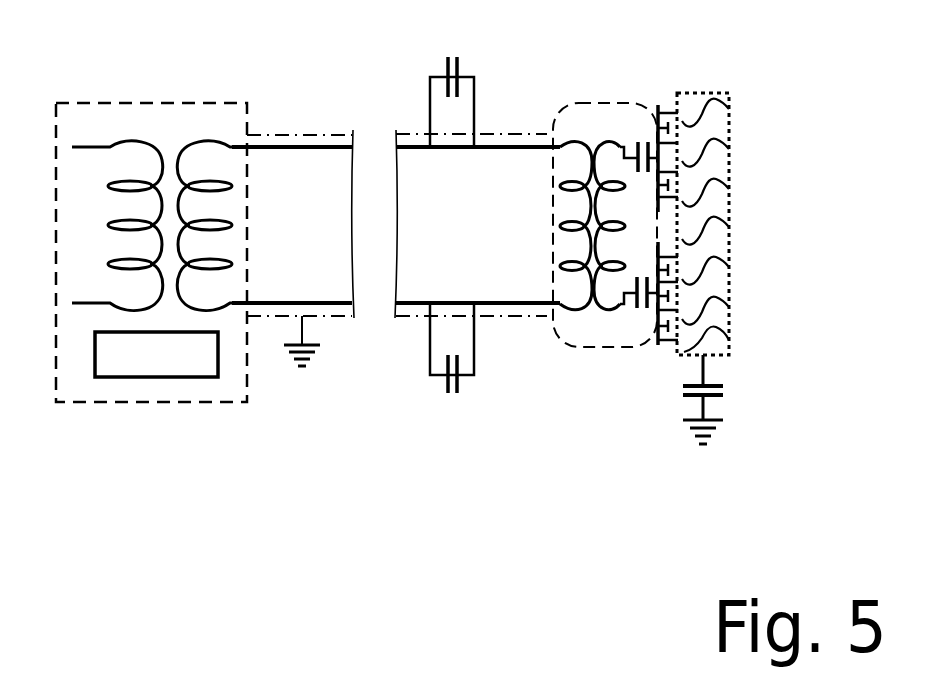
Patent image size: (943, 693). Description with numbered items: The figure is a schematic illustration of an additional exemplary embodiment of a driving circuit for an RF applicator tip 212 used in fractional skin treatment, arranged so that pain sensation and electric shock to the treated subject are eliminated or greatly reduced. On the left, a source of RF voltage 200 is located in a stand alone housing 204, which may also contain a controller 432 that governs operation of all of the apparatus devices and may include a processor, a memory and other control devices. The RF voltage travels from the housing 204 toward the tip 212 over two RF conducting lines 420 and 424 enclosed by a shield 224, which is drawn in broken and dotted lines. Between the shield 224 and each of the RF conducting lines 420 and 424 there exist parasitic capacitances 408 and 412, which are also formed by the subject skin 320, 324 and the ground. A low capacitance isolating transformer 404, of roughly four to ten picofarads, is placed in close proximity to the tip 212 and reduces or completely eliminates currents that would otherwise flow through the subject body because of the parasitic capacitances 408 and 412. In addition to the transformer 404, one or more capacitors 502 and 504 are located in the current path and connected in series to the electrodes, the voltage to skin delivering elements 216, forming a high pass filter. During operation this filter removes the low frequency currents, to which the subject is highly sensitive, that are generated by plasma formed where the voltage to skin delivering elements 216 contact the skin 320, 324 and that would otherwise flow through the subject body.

The source of RF voltage 200 is at (138, 76).
The stand alone housing 204 is at (122, 397).
The controller 432 is at (190, 358).
The shield 224 is at (279, 134).
The RF conducting line 420 is at (306, 149).
The RF conducting line 424 is at (405, 302).
The parasitic capacitance 408 is at (428, 102).
The parasitic capacitance 412 is at (430, 355).
The applicator tip 212 is at (581, 104).
The isolating transformer 404 is at (596, 325).
The capacitor 502 is at (649, 142).
The capacitor 504 is at (649, 312).
The voltage to skin delivering elements 216 is at (676, 172).
The skin 320 is at (702, 92).
The skin 324 is at (732, 198).